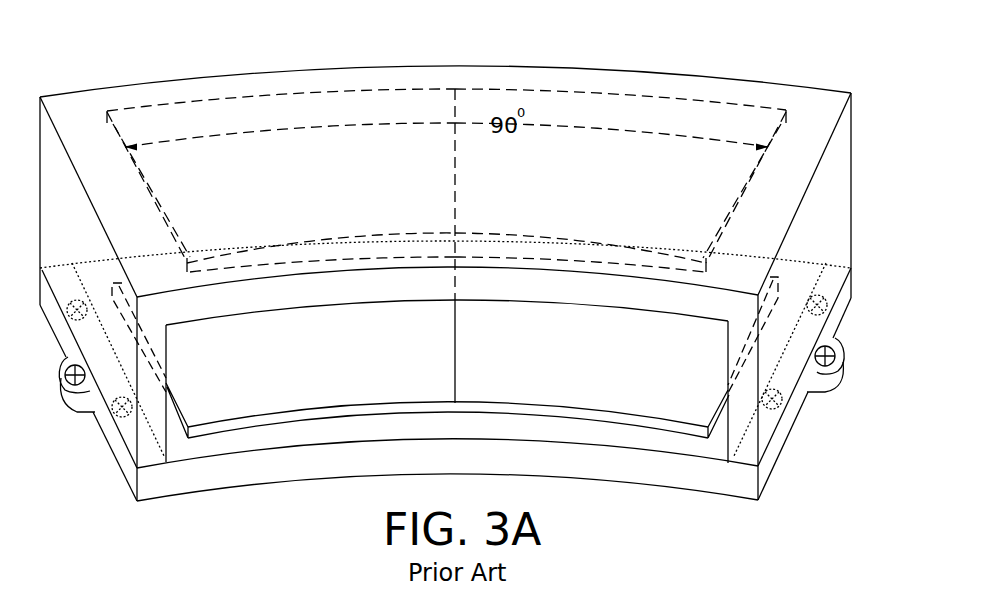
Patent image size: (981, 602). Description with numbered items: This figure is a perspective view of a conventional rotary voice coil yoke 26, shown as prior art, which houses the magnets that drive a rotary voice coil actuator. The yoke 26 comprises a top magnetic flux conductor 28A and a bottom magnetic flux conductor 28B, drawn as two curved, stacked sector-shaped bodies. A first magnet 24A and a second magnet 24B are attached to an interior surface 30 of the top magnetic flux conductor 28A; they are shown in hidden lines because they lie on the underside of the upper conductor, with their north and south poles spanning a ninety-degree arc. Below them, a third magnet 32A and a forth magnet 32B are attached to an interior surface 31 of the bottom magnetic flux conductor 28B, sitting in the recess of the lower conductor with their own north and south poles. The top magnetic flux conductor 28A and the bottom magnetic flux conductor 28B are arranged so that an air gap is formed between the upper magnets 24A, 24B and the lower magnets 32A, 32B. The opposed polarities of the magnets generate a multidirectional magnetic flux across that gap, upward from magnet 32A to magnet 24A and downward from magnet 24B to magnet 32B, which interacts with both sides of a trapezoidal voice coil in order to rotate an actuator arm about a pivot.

The rotary voice coil yoke 26 is at (138, 60).
The top magnetic flux conductor 28A is at (837, 109).
The bottom magnetic flux conductor 28B is at (743, 489).
The first magnet 24A is at (305, 210).
The second magnet 24B is at (627, 209).
The interior surface of the top magnetic flux conductor 30 is at (477, 306).
The interior surface of the bottom magnetic flux conductor 31 is at (418, 438).
The third magnet 32A is at (291, 379).
The forth magnet 32B is at (612, 377).